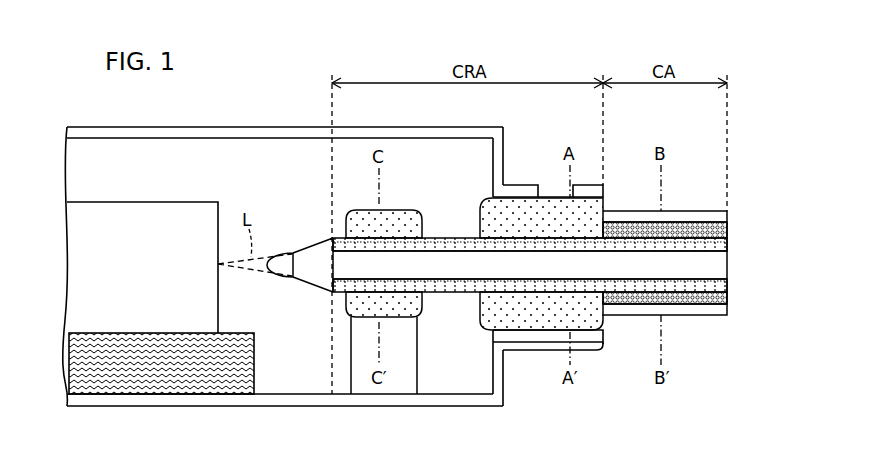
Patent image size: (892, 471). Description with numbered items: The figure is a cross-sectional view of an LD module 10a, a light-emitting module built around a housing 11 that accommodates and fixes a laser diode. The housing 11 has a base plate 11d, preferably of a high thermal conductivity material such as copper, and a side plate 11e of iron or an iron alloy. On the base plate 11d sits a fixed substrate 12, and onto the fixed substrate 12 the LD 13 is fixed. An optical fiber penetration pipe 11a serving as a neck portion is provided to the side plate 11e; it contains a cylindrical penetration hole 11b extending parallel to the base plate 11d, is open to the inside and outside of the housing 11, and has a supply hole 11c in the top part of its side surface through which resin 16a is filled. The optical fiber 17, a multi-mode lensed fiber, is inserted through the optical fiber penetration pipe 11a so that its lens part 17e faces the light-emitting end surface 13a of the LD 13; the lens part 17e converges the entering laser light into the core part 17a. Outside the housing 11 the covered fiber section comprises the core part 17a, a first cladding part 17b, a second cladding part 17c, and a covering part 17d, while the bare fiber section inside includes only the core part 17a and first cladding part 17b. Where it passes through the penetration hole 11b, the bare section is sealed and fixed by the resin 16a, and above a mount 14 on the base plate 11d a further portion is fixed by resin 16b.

The LD module 10a is at (747, 138).
The housing 11 is at (217, 133).
The optical fiber penetration pipe 11a is at (603, 180).
The penetration hole 11b is at (616, 324).
The supply hole 11c is at (561, 181).
The base plate 11d is at (215, 402).
The side plate 11e is at (507, 148).
The fixed substrate 12 is at (257, 377).
The LD 13 is at (155, 201).
The light-emitting end surface 13a is at (228, 209).
The mount 14 is at (420, 357).
The resin 16a is at (492, 212).
The resin 16b is at (395, 210).
The optical fiber 17 is at (547, 253).
The core part 17a is at (720, 259).
The first cladding part 17b is at (720, 243).
The second cladding part 17c is at (720, 231).
The covering part 17d is at (790, 315).
The lens part 17e is at (304, 250).